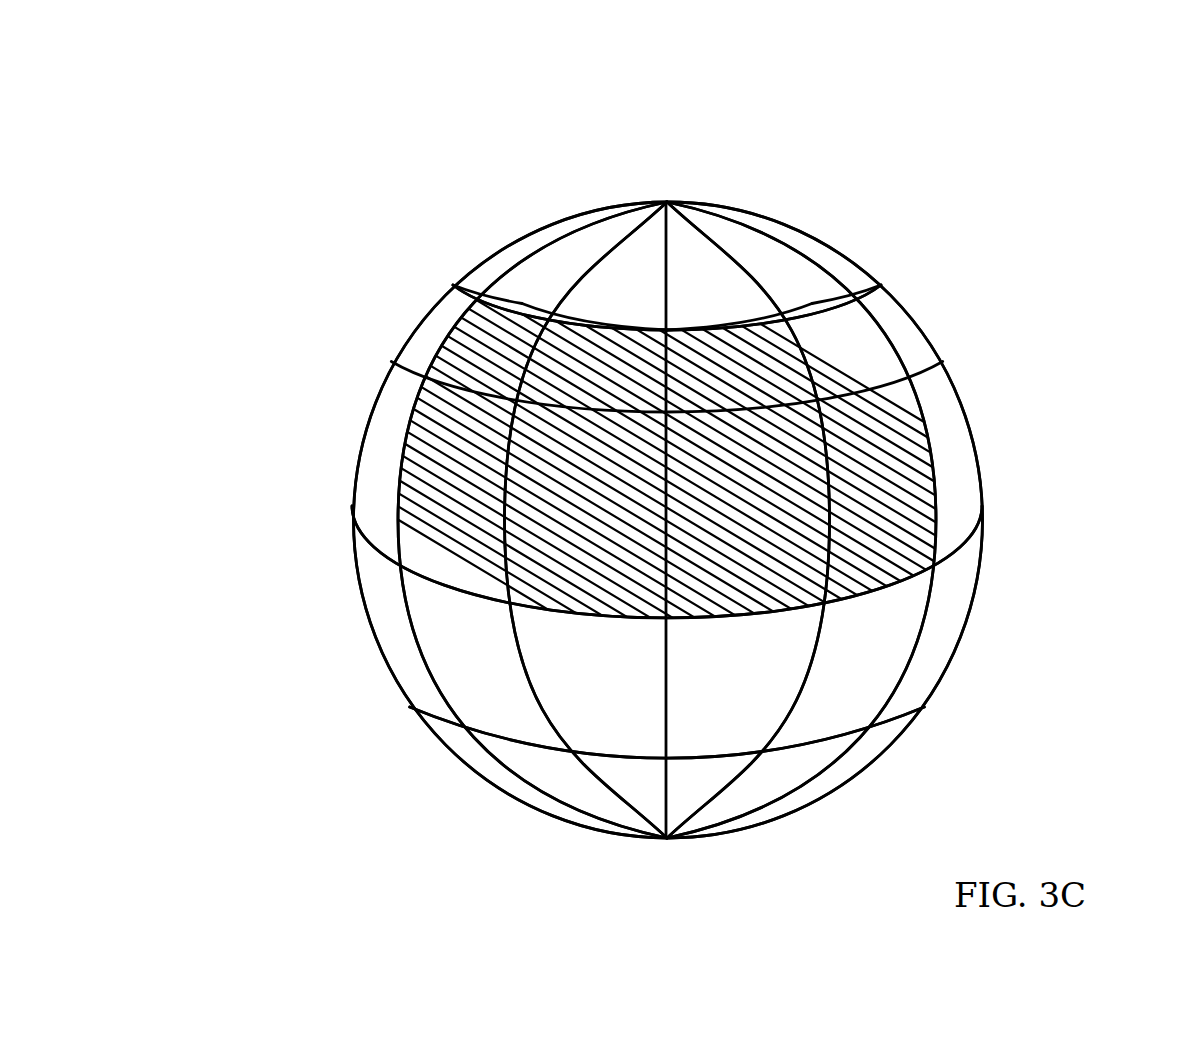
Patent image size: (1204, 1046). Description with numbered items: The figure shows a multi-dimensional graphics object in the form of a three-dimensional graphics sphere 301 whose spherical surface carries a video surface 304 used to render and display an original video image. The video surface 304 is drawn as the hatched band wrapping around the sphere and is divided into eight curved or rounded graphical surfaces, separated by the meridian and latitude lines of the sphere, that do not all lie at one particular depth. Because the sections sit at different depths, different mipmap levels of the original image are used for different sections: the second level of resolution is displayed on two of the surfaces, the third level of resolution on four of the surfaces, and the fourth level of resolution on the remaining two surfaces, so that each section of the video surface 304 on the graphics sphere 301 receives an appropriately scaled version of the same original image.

The 3-D graphics sphere 301 is at (268, 66).
The video surface 304 is at (440, 360).